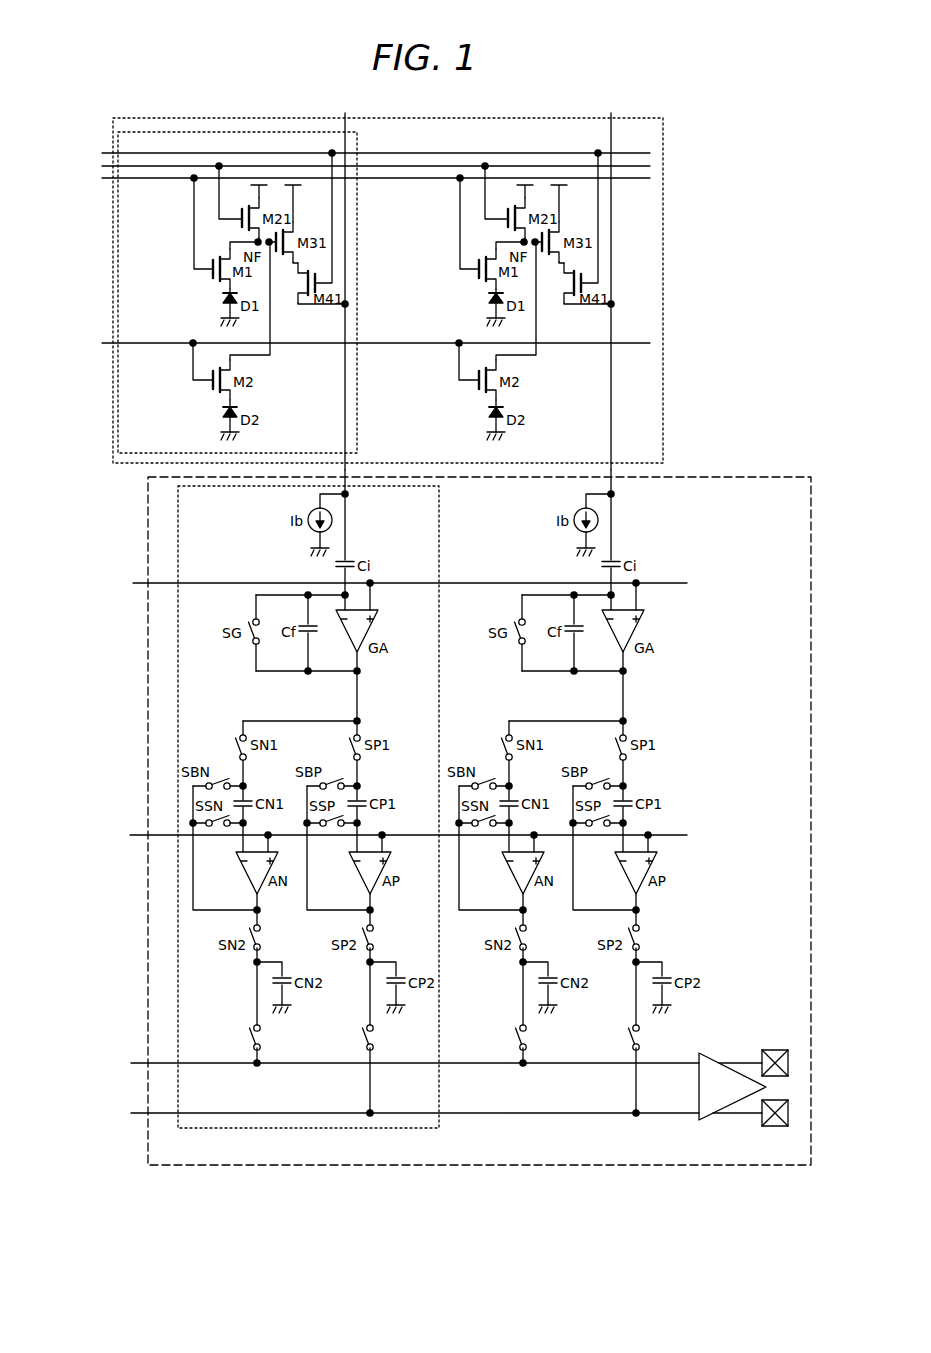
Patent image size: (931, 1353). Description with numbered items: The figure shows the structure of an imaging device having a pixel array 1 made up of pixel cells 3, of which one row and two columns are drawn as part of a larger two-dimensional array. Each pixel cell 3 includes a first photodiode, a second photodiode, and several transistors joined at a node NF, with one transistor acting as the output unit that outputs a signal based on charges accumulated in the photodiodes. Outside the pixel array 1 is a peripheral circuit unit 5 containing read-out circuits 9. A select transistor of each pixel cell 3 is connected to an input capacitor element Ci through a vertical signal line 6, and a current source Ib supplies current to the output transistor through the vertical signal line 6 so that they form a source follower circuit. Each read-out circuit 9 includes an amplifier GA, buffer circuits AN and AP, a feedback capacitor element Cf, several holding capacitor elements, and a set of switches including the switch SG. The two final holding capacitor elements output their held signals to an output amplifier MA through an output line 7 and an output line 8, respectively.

The pixel array 1 is at (388, 272).
The pixel cell 3 is at (307, 132).
The peripheral circuit unit 5 is at (428, 817).
The vertical signal line 6 is at (350, 527).
The output line 7 is at (665, 1063).
The output line 8 is at (660, 1113).
The read-out circuit 9 is at (439, 555).